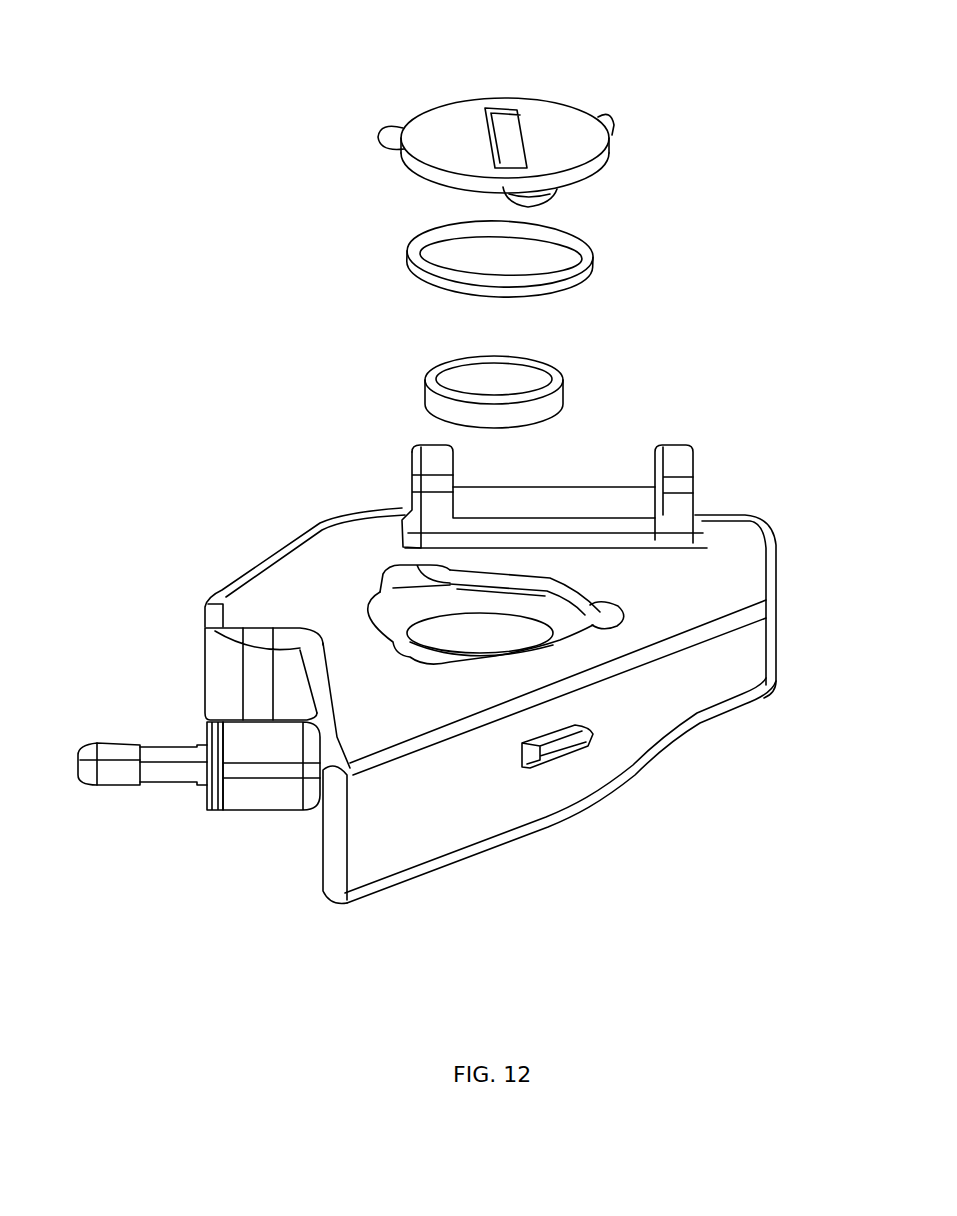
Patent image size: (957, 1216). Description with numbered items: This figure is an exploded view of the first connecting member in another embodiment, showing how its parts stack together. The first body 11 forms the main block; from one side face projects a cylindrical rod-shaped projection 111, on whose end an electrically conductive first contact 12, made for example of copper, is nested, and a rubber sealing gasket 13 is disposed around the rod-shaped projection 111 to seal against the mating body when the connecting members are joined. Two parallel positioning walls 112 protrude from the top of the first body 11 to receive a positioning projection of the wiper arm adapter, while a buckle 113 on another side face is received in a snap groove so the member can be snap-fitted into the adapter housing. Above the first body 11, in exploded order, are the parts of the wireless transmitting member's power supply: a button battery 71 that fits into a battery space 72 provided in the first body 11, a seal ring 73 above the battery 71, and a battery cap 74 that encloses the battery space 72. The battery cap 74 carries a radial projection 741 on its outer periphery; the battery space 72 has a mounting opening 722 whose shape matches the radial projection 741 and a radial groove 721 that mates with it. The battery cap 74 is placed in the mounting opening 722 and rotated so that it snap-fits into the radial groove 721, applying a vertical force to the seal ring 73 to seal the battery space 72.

The first body 11 is at (723, 677).
The rod-shaped projection 111 is at (170, 768).
The positioning wall 112 is at (442, 460).
The buckle 113 is at (567, 757).
The first contact 12 is at (90, 785).
The sealing gasket 13 is at (210, 810).
The battery 71 is at (543, 408).
The battery space 72 is at (517, 627).
The radial groove 721 is at (512, 583).
The mounting opening 722 is at (390, 568).
The seal ring 73 is at (573, 289).
The battery cap 74 is at (583, 142).
The radial projection 741 is at (390, 128).